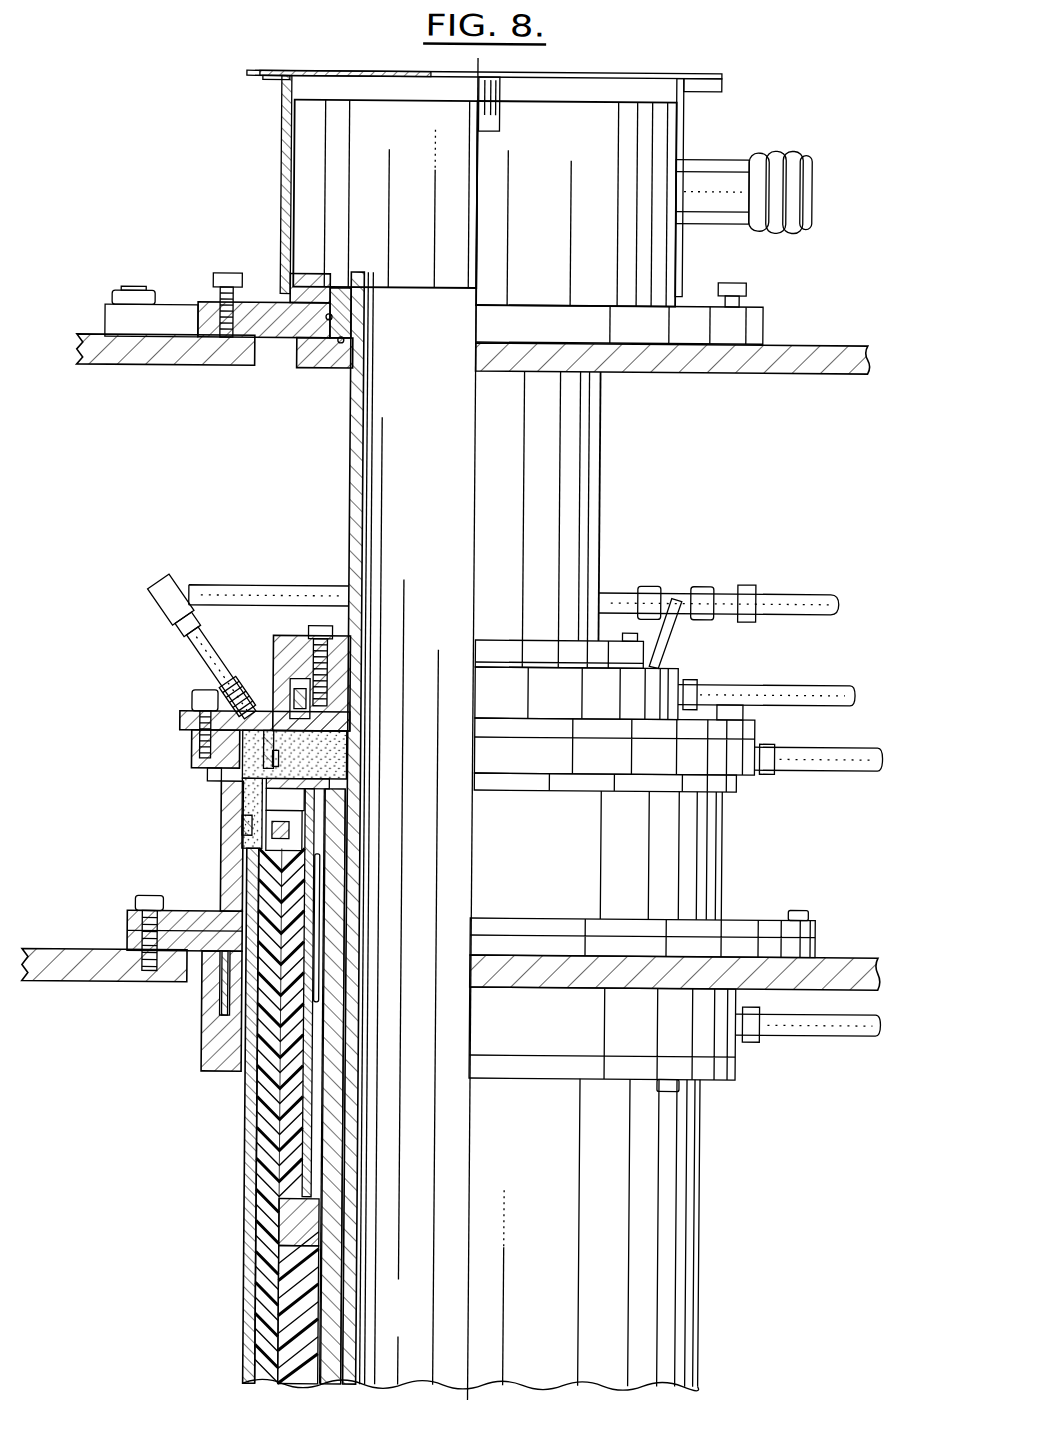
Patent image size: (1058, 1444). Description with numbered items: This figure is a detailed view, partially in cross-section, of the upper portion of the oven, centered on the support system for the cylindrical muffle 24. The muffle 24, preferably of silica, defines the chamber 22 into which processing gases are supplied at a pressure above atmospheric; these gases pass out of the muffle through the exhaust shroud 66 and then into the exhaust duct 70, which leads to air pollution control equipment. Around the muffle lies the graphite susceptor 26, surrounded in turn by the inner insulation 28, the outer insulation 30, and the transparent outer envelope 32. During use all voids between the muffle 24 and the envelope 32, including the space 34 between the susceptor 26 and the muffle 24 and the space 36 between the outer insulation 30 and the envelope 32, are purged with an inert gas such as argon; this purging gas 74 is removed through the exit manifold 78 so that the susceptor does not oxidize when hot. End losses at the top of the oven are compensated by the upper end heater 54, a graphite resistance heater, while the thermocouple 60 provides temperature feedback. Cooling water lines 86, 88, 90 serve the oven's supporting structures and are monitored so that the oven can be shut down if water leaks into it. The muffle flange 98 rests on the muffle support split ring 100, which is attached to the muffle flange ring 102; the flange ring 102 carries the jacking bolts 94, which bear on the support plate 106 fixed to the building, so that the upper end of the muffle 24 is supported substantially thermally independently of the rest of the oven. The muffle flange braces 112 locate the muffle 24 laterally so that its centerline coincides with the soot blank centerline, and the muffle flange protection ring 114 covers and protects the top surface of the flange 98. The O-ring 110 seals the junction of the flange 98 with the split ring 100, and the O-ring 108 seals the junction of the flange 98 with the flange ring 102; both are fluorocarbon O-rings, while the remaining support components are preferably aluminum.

The chamber 22 is at (432, 534).
The muffle 24 is at (353, 1337).
The susceptor 26 is at (330, 1278).
The inner insulation 28 is at (295, 1218).
The outer insulation 30 is at (273, 1188).
The outer envelope 32 is at (250, 1152).
The space 34 is at (345, 1305).
The space 36 is at (260, 1255).
The upper end heater 54 is at (310, 1120).
The thermocouple 60 is at (323, 967).
The exhaust shroud 66 is at (579, 153).
The exhaust duct 70 is at (775, 156).
The purging gas 74 is at (905, 603).
The exit manifold 78 is at (255, 586).
The cooling water line 86 is at (843, 1040).
The cooling water line 88 is at (850, 770).
The cooling water line 90 is at (826, 686).
The jacking bolts 94 is at (740, 291).
The muffle flange 98 is at (354, 323).
The muffle support split ring 100 is at (316, 370).
The muffle flange ring 102 is at (272, 340).
The support plate 106 is at (175, 362).
The O-ring 108 is at (330, 318).
The O-ring 110 is at (341, 343).
The muffle flange braces 112 is at (110, 318).
The muffle flange protection ring 114 is at (326, 275).